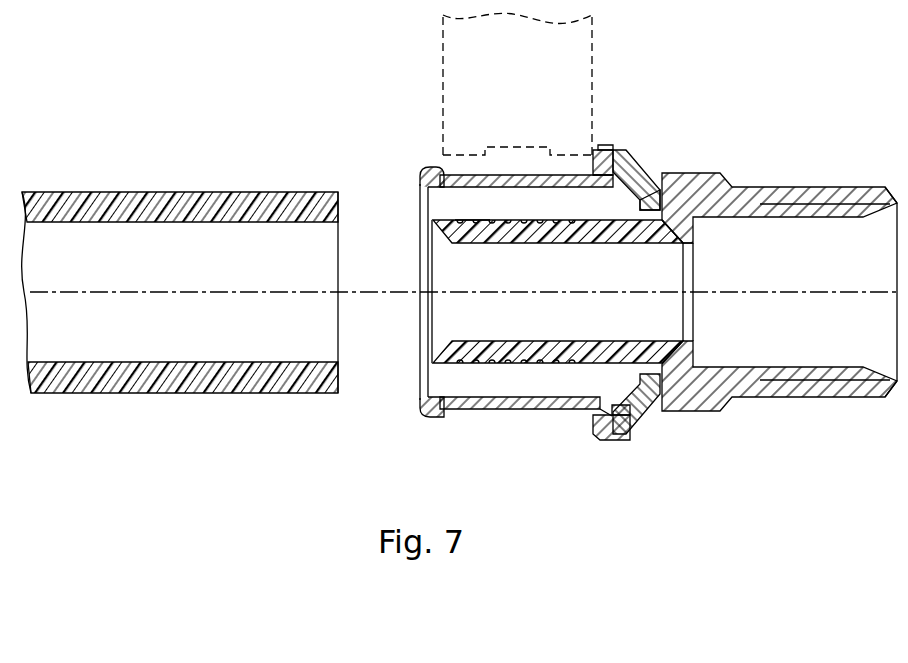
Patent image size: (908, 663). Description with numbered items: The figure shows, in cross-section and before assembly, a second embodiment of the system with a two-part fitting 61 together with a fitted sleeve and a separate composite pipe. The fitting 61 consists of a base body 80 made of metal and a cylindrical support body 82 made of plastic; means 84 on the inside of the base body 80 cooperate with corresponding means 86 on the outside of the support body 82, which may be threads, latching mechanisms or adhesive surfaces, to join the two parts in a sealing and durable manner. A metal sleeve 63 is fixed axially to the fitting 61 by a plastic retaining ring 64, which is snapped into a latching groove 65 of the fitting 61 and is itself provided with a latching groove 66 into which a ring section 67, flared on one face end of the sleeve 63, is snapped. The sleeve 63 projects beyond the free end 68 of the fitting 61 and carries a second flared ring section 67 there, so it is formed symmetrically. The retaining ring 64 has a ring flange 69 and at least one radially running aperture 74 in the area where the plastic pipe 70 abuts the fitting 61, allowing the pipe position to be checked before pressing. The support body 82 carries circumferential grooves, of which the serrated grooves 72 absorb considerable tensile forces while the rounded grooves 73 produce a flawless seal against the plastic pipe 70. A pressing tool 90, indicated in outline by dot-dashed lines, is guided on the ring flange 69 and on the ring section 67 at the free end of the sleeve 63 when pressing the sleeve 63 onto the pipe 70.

The fitting 61 is at (742, 190).
The sleeve 63 is at (515, 175).
The retaining ring 64 is at (596, 148).
The latching groove 65 is at (665, 406).
The latching groove 66 is at (620, 165).
The ring section 67 is at (423, 169).
The free end 68 is at (428, 268).
The ring flange 69 is at (593, 174).
The plastic pipe 70 is at (176, 192).
The serrated circumferential grooves 72 is at (567, 365).
The rounded circumferential grooves 73 is at (484, 218).
The radially running aperture 74 is at (635, 176).
The base body 80 is at (846, 170).
The support body 82 is at (426, 369).
The connecting means 84 is at (645, 223).
The corresponding connecting means 86 is at (662, 236).
The pressing tool 90 is at (445, 112).